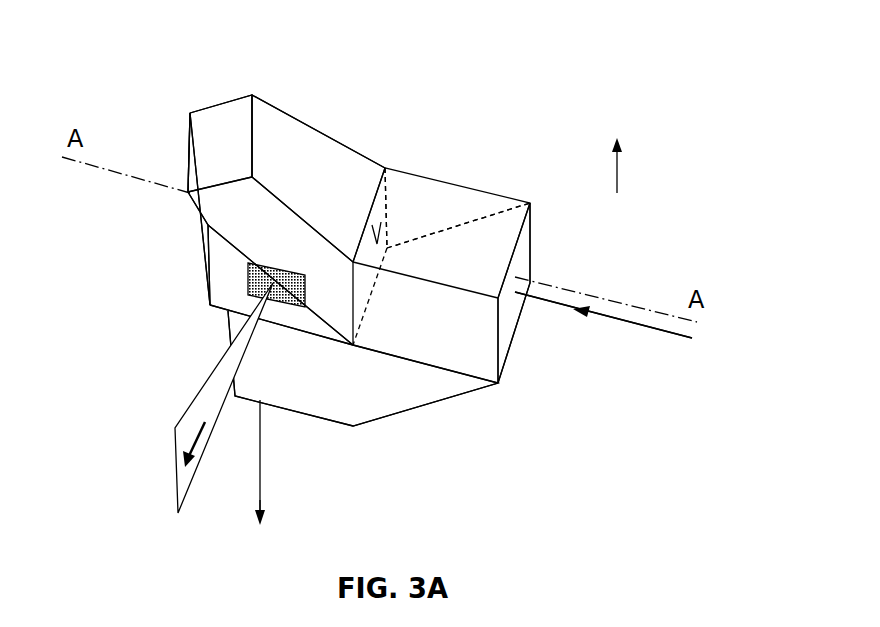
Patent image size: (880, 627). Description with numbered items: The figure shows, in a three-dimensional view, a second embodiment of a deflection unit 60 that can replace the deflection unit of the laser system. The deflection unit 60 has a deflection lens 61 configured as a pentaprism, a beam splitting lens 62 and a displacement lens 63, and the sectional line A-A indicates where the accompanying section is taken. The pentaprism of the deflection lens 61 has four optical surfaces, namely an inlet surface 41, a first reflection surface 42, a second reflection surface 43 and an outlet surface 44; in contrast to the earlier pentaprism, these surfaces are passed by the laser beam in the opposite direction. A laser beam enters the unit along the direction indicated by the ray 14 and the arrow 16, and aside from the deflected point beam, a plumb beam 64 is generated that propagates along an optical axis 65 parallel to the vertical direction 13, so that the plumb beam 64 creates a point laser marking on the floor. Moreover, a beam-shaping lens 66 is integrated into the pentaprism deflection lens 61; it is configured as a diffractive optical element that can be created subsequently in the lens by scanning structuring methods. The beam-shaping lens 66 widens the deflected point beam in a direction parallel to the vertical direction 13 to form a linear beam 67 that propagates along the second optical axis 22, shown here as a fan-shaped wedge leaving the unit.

The deflection unit 60 is at (540, 118).
The deflection lens 61 is at (228, 123).
The second reflection surface 43 is at (300, 155).
The first reflection surface 42 is at (200, 208).
The outlet surface 44 is at (227, 263).
The inlet surface 41 is at (380, 222).
The beam splitting lens 62 is at (510, 330).
The displacement lens 63 is at (398, 385).
The beam-shaping lens 66 is at (290, 283).
The linear beam 67 is at (197, 393).
The second optical axis 22 is at (187, 447).
The plumb beam 64 is at (260, 455).
The optical axis 65 is at (260, 505).
The vertical direction 13 is at (617, 167).
The incoming beam direction 16 is at (603, 317).
The incoming light ray 14 is at (670, 337).